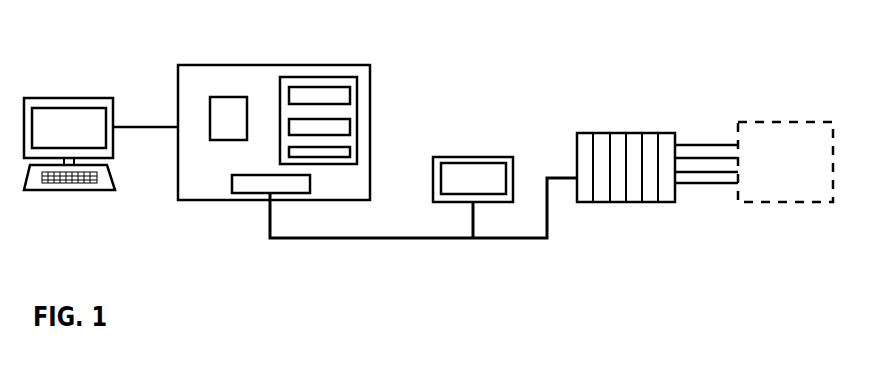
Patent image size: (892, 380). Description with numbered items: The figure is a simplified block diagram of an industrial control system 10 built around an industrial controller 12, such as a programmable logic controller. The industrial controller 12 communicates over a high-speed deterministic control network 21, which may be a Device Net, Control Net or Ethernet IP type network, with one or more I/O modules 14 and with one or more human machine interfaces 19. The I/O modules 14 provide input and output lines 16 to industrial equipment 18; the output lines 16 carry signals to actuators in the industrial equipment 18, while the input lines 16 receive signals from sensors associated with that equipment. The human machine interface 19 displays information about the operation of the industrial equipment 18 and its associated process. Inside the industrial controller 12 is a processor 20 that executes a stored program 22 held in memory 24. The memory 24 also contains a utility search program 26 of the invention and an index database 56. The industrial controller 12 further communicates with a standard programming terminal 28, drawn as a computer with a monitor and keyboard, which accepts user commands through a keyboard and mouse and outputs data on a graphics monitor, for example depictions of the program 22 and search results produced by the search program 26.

The industrial control system 10 is at (477, 93).
The industrial controller 12 is at (275, 64).
The I/O modules 14 is at (667, 133).
The input and output lines 16 is at (707, 157).
The industrial equipment 18 is at (785, 162).
The human machine interface 19 is at (477, 157).
The processor 20 is at (230, 103).
The high-speed control network 21 is at (270, 234).
The stored program 22 is at (350, 97).
The memory 24 is at (337, 77).
The utility search program 26 is at (350, 128).
The programming terminal 28 is at (108, 68).
The index database 56 is at (350, 155).